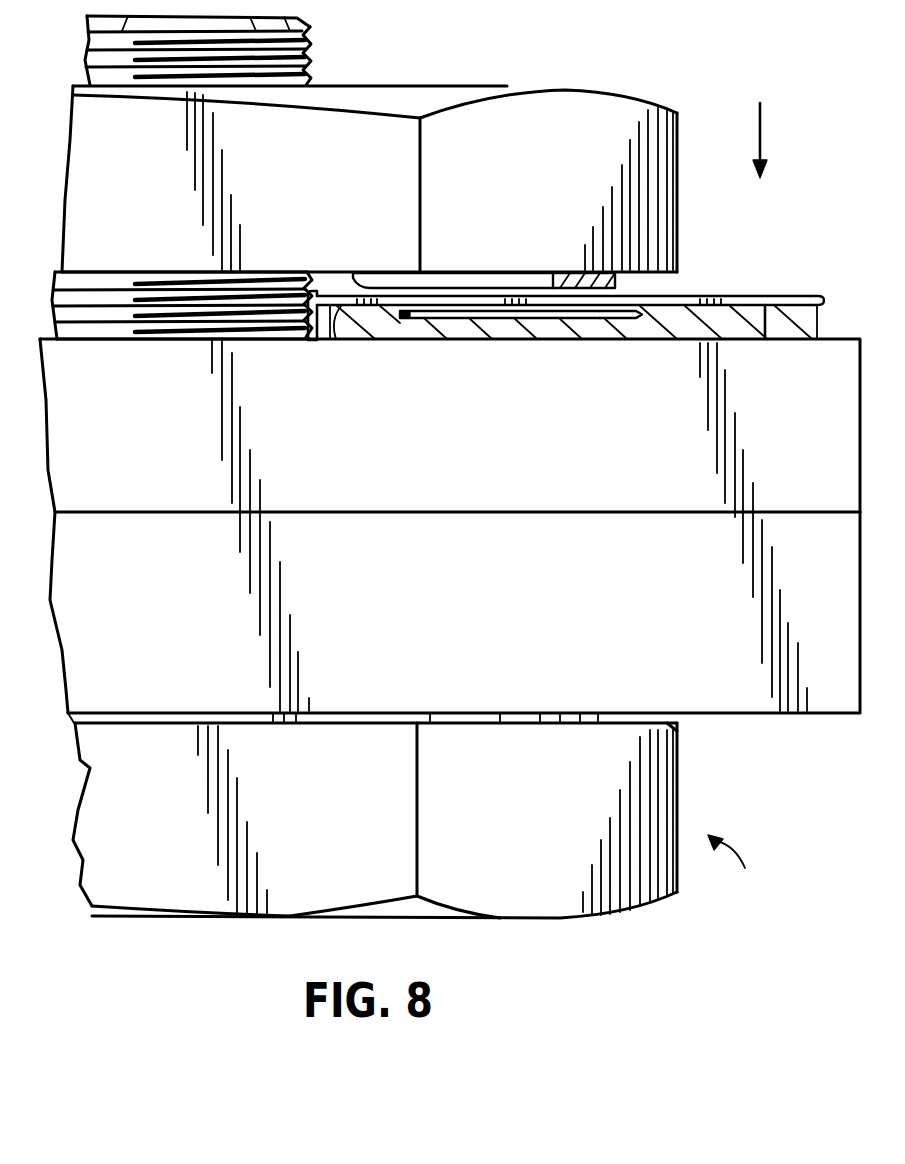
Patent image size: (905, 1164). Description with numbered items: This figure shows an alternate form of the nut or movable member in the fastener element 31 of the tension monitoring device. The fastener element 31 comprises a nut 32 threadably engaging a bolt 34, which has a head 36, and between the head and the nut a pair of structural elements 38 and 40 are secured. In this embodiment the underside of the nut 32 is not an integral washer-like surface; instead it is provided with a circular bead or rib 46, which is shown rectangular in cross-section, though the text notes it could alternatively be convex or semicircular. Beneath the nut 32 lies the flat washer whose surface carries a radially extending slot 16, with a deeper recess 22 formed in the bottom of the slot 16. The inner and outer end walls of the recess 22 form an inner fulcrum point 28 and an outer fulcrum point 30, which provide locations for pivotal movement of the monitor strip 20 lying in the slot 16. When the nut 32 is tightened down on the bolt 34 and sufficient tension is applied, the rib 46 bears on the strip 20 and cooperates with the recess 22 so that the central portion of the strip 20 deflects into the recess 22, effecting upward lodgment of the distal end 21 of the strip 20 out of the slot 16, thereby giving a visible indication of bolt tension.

The slot 16 is at (340, 306).
The monitor strip 20 is at (682, 298).
The distal end 21 is at (802, 296).
The recess 22 is at (547, 314).
The inner fulcrum point 28 is at (421, 322).
The outer fulcrum point 30 is at (618, 318).
The fastener element 31 is at (747, 862).
The nut 32 is at (572, 113).
The bolt 34 is at (308, 48).
The head 36 is at (600, 777).
The structural element 38 is at (628, 500).
The structural element 40 is at (616, 587).
The circular bead or rib 46 is at (469, 273).